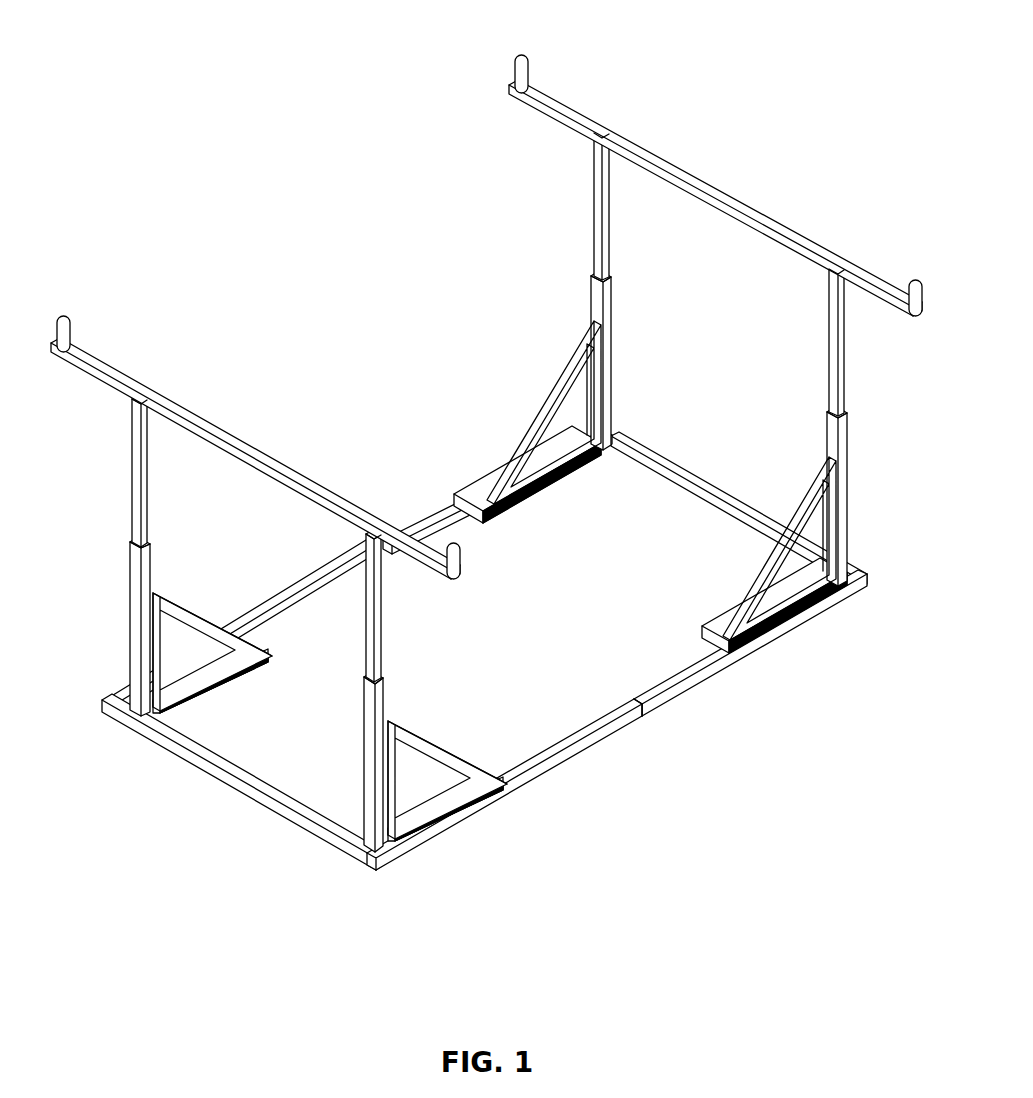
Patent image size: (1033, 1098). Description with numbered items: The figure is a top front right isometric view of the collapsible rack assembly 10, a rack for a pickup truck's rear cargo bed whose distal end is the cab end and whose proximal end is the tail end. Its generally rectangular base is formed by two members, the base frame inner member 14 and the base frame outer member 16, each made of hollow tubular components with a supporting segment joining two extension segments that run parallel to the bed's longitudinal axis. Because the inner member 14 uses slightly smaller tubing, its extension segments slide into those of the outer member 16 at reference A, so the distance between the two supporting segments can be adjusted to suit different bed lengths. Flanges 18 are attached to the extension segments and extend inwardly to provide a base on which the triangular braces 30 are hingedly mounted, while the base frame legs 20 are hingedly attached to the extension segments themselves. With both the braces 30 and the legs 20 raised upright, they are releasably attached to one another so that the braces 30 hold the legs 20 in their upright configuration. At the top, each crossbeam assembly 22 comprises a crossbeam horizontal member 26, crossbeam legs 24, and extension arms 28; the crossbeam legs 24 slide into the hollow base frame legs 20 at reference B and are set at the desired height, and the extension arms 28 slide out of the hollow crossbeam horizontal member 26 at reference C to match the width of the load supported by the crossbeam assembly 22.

The collapsible rack assembly 10 is at (138, 128).
The base frame inner member 14 is at (705, 680).
The base frame outer member 16 is at (565, 762).
The flanges 18 is at (560, 495).
The base frame legs 20 is at (612, 326).
The crossbeam assembly 22 is at (812, 140).
The crossbeam legs 24 is at (592, 198).
The crossbeam horizontal member 26 is at (722, 190).
The extension arms 28 is at (521, 56).
The triangular braces 30 is at (543, 400).
The reference A is at (644, 718).
The reference B is at (592, 270).
The reference C is at (600, 126).